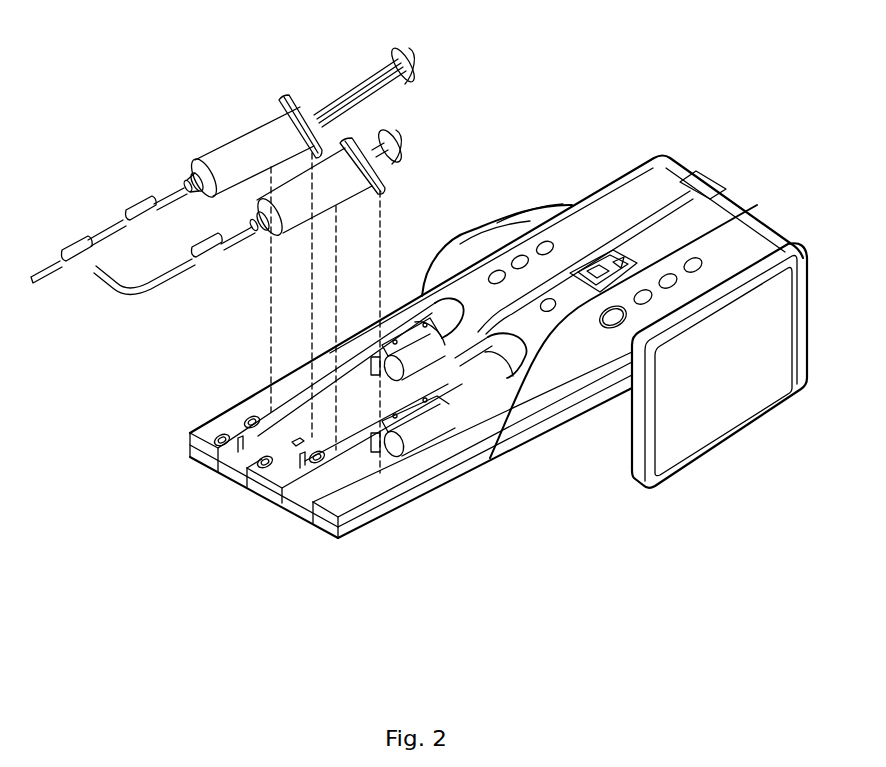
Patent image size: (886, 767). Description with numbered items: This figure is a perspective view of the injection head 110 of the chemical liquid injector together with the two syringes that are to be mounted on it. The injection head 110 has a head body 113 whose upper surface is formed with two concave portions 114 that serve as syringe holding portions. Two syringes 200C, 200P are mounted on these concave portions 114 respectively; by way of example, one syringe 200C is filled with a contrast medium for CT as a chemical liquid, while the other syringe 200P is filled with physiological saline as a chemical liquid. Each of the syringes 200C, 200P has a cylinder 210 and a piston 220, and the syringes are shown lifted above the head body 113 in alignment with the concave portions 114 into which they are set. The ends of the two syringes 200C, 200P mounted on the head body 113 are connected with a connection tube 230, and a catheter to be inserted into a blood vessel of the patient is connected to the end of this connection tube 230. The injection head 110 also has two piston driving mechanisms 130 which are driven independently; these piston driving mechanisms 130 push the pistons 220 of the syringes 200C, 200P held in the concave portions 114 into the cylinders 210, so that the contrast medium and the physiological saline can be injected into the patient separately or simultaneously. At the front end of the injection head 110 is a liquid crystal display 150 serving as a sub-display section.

The injection head 110 is at (758, 220).
The head body 113 is at (552, 425).
The concave portions 114 is at (298, 507).
The piston driving mechanisms 130 is at (405, 358).
The liquid crystal display 150 is at (708, 418).
The syringe 200C is at (420, 61).
The syringe 200P is at (413, 138).
The cylinder 210 is at (228, 152).
The piston 220 is at (337, 97).
The connection tube 230 is at (100, 238).